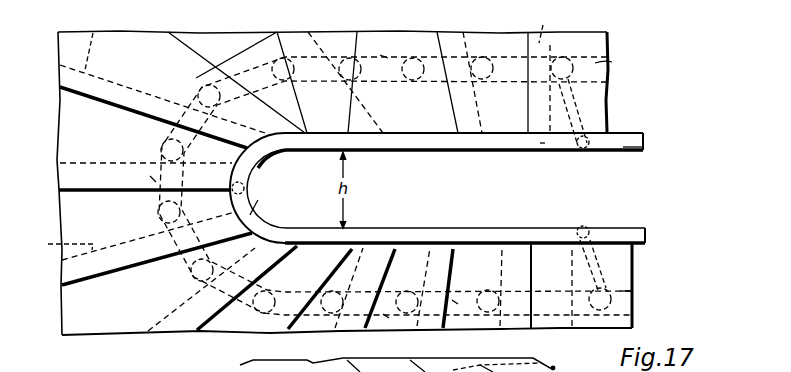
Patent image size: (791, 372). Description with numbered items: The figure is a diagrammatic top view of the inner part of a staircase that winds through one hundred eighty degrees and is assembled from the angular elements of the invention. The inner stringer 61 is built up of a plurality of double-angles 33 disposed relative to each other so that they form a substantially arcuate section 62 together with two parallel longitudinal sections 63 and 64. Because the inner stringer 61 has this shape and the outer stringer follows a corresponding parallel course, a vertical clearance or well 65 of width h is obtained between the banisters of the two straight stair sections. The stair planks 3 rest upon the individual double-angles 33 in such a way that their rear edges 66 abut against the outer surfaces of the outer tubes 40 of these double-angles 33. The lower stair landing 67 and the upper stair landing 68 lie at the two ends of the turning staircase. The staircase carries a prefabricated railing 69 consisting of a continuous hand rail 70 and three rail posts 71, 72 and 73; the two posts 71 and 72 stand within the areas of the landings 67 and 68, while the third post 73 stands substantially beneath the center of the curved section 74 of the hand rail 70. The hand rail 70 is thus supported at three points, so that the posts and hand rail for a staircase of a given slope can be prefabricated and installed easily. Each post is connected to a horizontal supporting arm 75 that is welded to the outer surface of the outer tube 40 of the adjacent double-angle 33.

The stair plank 3 is at (83, 132).
The double-angle 33 is at (183, 115).
The outer tube 40 is at (204, 88).
The inner stringer 61 is at (455, 303).
The arcuate section 62 is at (152, 180).
The longitudinal section 63 is at (385, 318).
The longitudinal section 64 is at (390, 60).
The well 65 is at (325, 196).
The rear edge 66 is at (295, 129).
The lower stair landing 67 is at (620, 291).
The upper stair landing 68 is at (607, 63).
The prefabricated railing 69 is at (623, 147).
The hand rail 70 is at (540, 143).
The rail post 71 is at (584, 224).
The rail post 72 is at (583, 148).
The rail post 73 is at (250, 183).
The curved section 74 is at (252, 217).
The supporting arm 75 is at (163, 132).